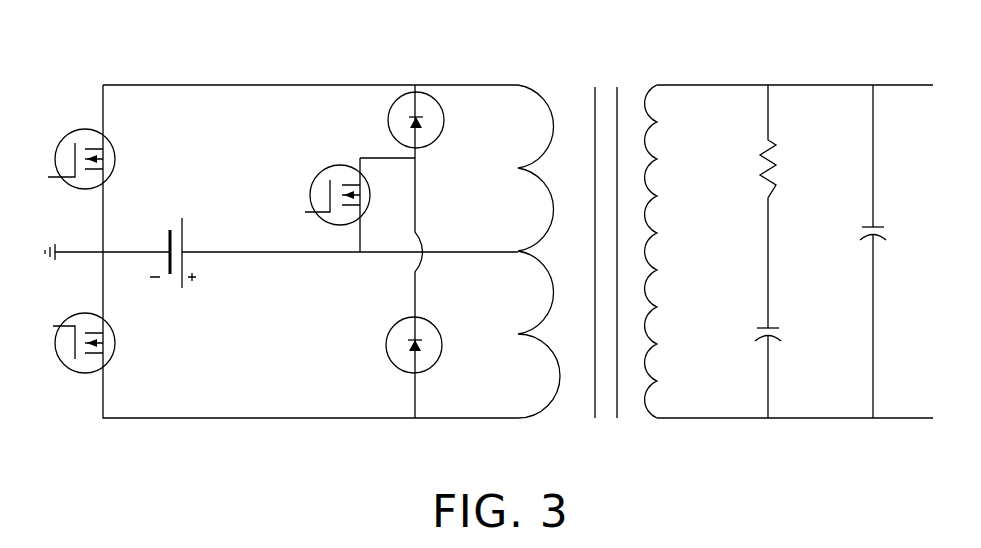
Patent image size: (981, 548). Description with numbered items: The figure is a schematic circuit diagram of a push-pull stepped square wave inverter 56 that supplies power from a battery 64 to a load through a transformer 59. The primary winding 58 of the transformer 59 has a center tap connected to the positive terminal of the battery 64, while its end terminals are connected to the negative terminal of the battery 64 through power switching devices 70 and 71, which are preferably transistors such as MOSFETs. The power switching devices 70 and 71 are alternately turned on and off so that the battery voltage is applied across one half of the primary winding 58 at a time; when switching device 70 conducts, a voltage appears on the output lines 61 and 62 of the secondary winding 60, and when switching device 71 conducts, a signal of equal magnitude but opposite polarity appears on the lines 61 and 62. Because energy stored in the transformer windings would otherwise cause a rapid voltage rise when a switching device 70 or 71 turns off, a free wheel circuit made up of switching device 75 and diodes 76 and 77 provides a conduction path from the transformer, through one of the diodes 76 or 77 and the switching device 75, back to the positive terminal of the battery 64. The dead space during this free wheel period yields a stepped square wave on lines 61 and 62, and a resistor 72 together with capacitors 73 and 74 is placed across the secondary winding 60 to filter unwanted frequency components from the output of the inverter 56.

The push-pull stepped square wave inverter 56 is at (196, 72).
The primary winding 58 is at (553, 411).
The transformer 59 is at (613, 55).
The secondary winding 60 is at (657, 192).
The output line 61 is at (737, 84).
The output line 62 is at (722, 419).
The battery 64 is at (183, 232).
The power switching device 70 is at (76, 129).
The power switching device 71 is at (82, 374).
The resistor 72 is at (776, 168).
The capacitor 73 is at (768, 328).
The capacitor 74 is at (876, 226).
The switching device 75 is at (321, 166).
The diode 76 is at (444, 134).
The diode 77 is at (433, 324).